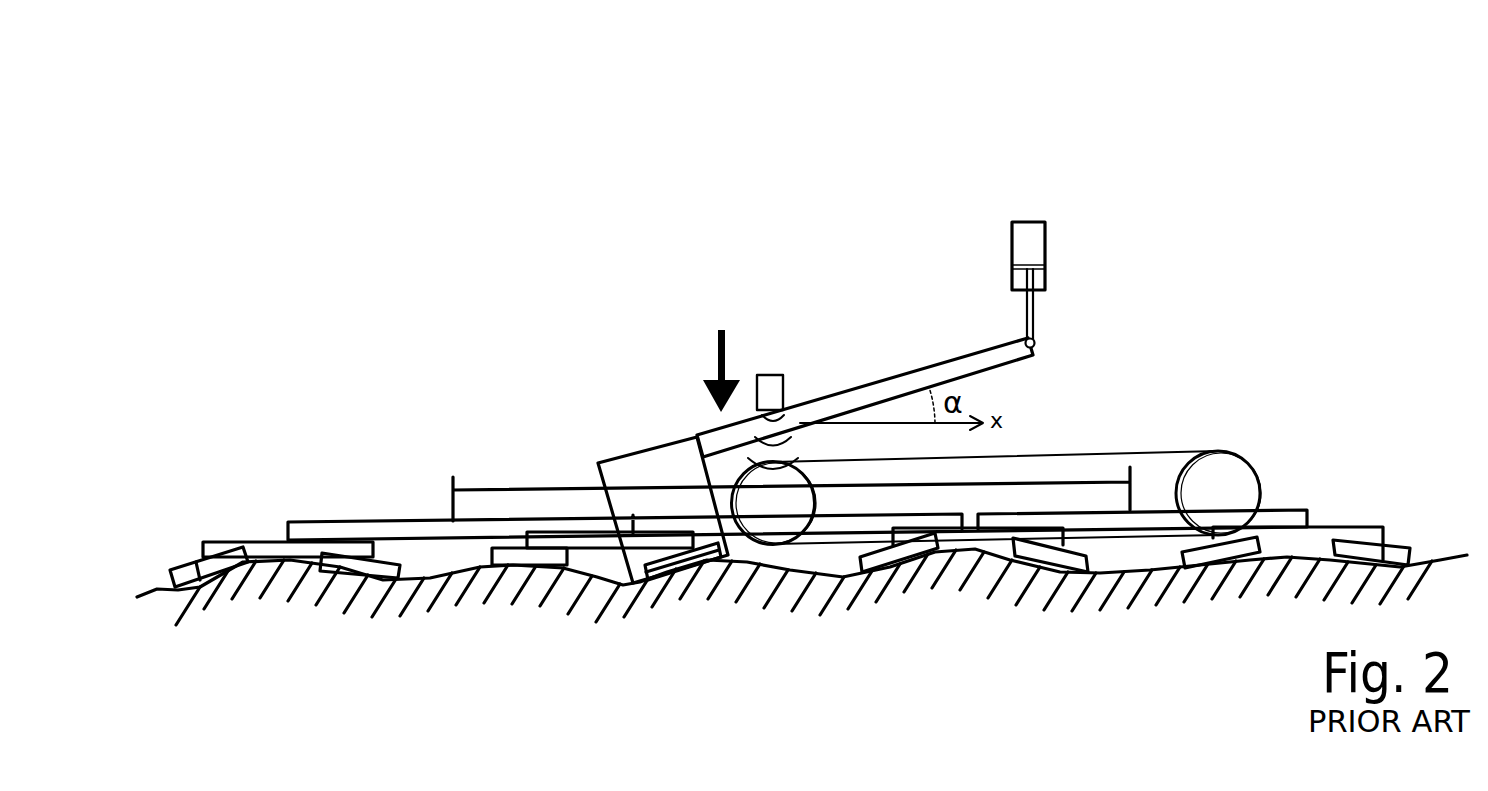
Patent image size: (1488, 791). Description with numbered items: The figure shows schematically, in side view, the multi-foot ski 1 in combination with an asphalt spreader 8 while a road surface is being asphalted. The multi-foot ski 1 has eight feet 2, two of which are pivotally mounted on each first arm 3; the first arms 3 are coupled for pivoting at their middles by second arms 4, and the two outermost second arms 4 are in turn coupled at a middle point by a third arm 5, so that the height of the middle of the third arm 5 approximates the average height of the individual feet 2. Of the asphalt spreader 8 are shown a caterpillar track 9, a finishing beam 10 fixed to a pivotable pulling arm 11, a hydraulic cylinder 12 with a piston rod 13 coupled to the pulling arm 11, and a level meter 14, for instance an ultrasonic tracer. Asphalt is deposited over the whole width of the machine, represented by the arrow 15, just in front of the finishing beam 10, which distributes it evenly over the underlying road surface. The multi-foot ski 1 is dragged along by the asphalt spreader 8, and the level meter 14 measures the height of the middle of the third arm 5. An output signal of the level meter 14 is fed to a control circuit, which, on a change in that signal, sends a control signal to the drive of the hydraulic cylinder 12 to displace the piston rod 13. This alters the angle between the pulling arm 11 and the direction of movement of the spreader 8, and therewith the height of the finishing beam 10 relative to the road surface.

The multi-foot ski 1 is at (337, 472).
The feet 2 is at (330, 578).
The first arm 3 is at (272, 540).
The second arms 4 is at (397, 520).
The third arm 5 is at (480, 488).
The asphalt spreader 8 is at (625, 197).
The caterpillar track 9 is at (1175, 440).
The finishing beam 10 is at (657, 438).
The pulling arm 11 is at (947, 357).
The hydraulic cylinder 12 is at (1047, 233).
The piston rod 13 is at (1040, 327).
The level meter 14 is at (785, 383).
The arrow 15 is at (721, 349).